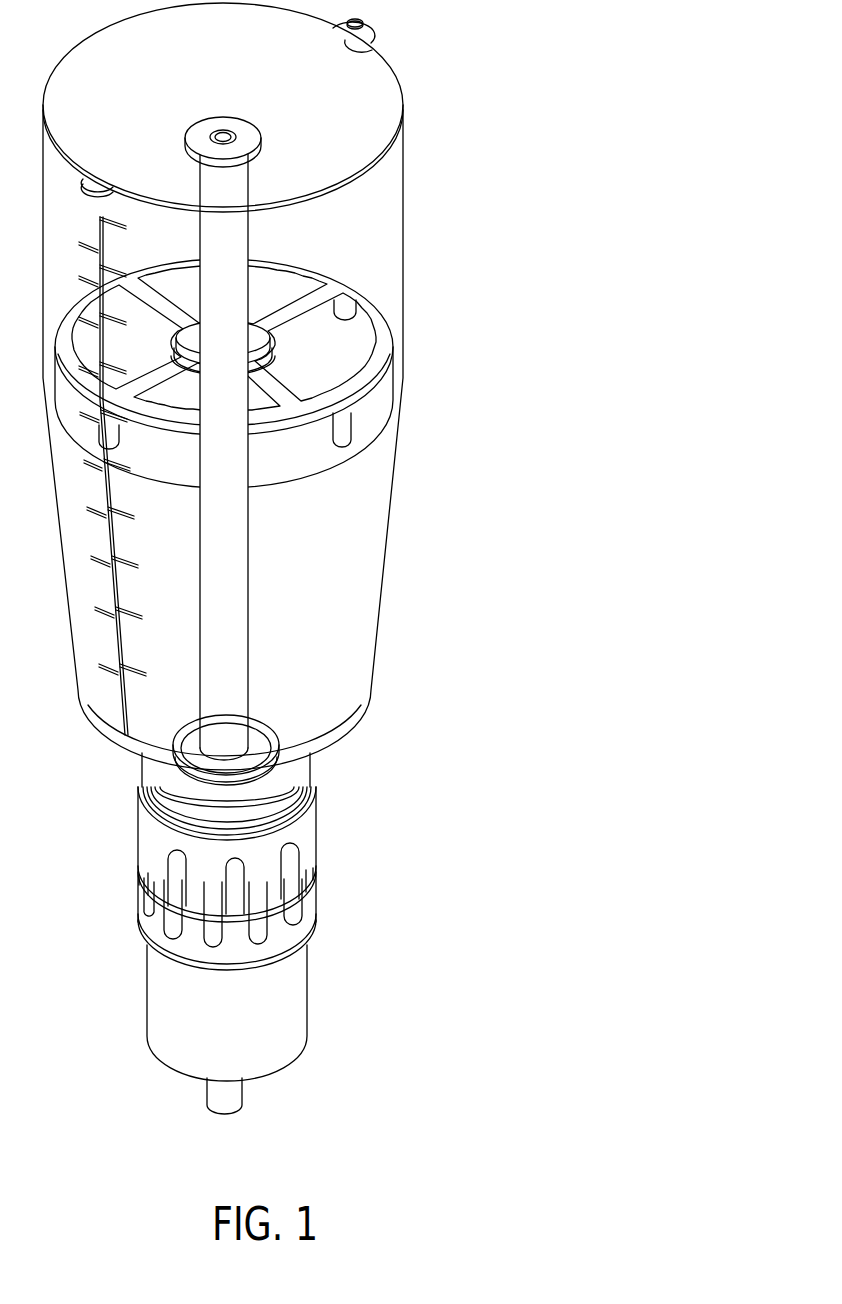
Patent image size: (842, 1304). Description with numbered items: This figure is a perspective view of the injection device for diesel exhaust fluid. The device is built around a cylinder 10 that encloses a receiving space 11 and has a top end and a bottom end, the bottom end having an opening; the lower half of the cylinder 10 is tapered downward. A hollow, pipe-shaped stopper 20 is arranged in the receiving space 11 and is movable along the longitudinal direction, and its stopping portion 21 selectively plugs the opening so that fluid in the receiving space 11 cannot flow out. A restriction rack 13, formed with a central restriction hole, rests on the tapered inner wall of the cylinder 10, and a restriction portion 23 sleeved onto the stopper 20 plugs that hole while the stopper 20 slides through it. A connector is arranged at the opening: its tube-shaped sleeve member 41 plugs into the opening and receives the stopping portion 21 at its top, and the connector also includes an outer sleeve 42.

The cylinder 10 is at (370, 494).
The receiving space 11 is at (378, 220).
The restriction rack 13 is at (382, 335).
The stopper 20 is at (230, 571).
The stopping portion 21 is at (258, 727).
The restriction portion 23 is at (262, 340).
The sleeve member 41 is at (267, 785).
The outer sleeve 42 is at (290, 994).